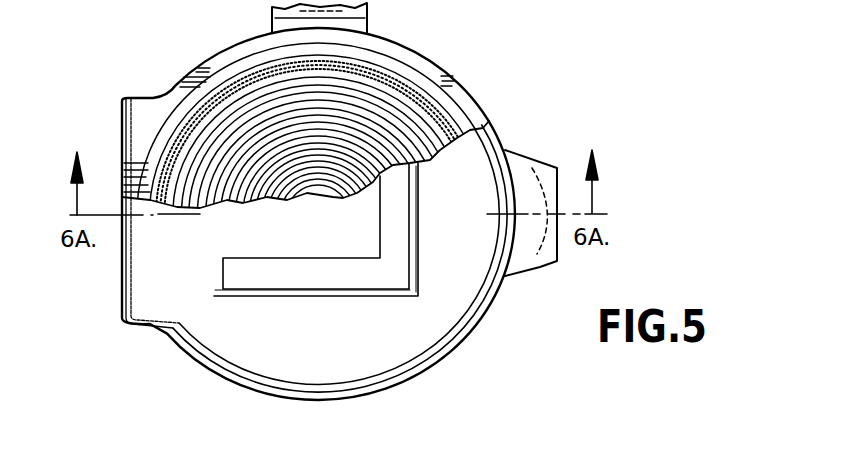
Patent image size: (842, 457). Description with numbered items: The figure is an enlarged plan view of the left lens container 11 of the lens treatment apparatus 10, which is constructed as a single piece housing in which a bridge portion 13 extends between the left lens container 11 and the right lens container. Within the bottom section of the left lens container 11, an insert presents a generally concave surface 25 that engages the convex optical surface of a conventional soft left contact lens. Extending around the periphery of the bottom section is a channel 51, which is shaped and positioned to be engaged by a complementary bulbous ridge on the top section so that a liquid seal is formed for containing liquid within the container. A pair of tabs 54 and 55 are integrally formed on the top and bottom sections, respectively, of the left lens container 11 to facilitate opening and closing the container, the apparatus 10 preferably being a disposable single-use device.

The lens treatment apparatus 10 is at (478, 78).
The left lens container 11 is at (182, 320).
The bridge portion 13 is at (350, 7).
The concave surface 25 is at (217, 137).
The channel 51 is at (413, 88).
The tab 54 is at (533, 252).
The tab 55 is at (532, 168).